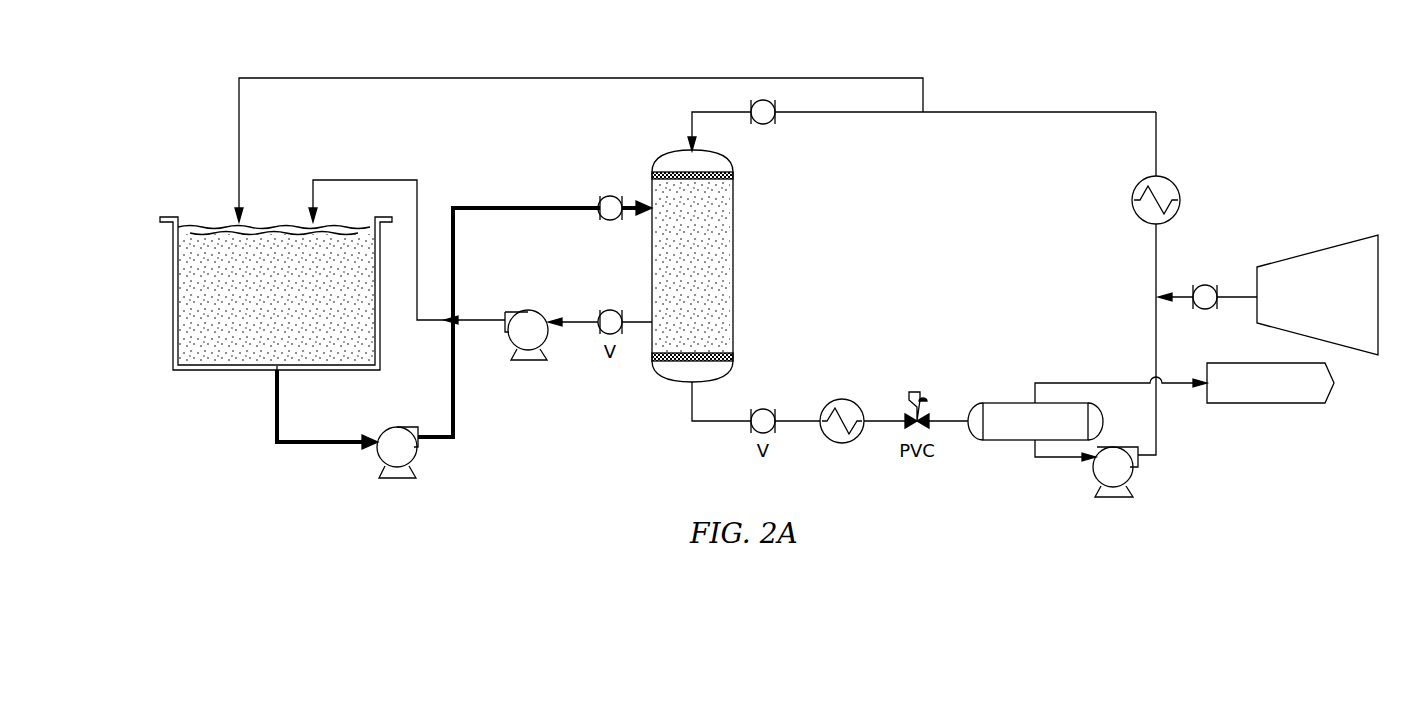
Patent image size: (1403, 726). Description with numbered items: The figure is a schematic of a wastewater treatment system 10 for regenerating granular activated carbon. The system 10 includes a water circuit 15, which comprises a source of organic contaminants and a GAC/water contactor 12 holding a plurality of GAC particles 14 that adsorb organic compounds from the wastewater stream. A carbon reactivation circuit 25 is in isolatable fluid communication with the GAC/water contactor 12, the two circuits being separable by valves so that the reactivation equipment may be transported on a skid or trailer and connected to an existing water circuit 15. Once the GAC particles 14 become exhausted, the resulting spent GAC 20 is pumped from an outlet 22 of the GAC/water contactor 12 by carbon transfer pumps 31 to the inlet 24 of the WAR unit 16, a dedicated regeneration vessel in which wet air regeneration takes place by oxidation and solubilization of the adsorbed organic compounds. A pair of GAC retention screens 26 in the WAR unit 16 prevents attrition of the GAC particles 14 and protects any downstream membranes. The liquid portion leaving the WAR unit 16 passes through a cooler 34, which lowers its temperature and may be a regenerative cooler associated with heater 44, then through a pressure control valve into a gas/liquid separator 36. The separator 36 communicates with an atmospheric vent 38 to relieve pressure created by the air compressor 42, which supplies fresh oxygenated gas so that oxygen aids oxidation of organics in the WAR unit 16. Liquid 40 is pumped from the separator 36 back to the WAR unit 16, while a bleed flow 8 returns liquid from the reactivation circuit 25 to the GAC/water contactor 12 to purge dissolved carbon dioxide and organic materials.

The bleed flow 8 is at (572, 80).
The wastewater treatment system 10 is at (802, 60).
The GAC/water contactor 12 is at (222, 375).
The GAC particles 14 is at (350, 330).
The water circuit 15 is at (367, 156).
The WAR unit 16 is at (735, 202).
The spent GAC 20 is at (330, 446).
The outlet 22 is at (278, 372).
The inlet 24 is at (647, 197).
The carbon reactivation circuit 25 is at (1002, 94).
The GAC retention screens 26 is at (735, 177).
The carbon transfer pumps 31 is at (415, 460).
The cooler 34 is at (845, 398).
The gas/liquid separator 36 is at (1015, 400).
The atmospheric vent 38 is at (1265, 405).
The liquid 40 is at (1068, 462).
The air compressor 42 is at (1315, 250).
The heater 44 is at (1140, 182).